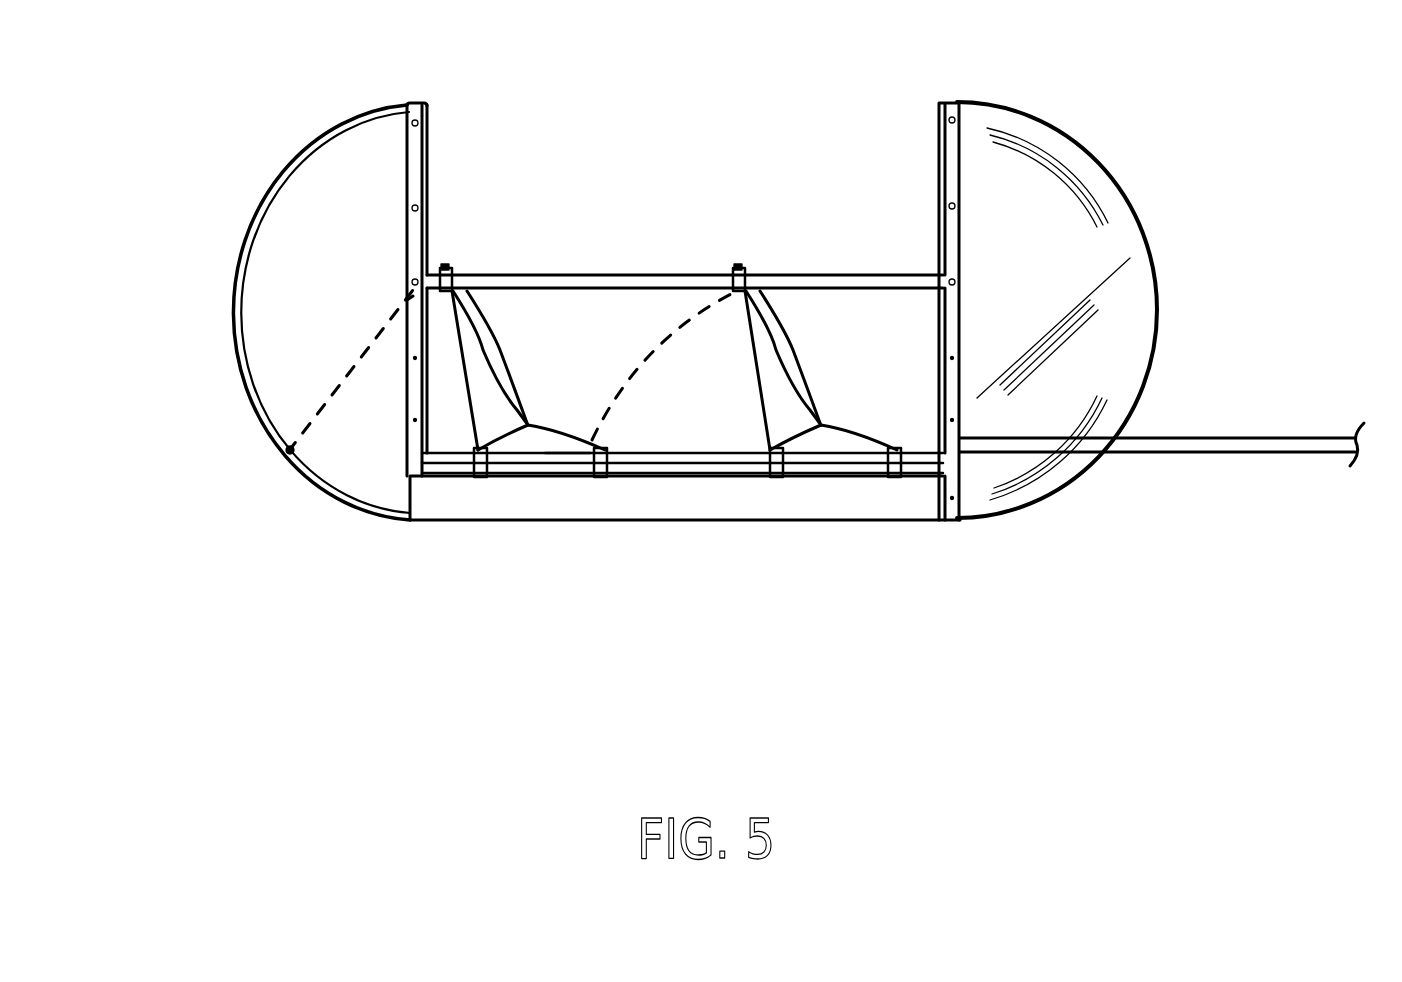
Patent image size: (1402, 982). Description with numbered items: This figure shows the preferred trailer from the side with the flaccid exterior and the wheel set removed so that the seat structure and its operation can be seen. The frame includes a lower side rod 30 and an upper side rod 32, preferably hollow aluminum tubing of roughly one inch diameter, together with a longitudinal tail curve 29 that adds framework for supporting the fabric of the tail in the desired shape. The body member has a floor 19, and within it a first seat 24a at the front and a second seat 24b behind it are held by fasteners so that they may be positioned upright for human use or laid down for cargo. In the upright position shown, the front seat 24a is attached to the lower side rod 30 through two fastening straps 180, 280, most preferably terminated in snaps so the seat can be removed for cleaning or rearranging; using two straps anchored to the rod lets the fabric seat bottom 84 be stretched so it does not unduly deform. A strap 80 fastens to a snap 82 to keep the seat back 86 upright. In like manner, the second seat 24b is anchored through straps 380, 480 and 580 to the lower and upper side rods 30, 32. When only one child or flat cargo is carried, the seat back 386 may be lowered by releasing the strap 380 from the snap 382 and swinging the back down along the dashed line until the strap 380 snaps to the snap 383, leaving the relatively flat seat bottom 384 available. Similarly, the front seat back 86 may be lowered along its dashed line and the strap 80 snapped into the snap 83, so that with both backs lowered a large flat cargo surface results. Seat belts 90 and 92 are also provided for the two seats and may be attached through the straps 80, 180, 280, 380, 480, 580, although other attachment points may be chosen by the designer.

The longitudinal tail curve 29 is at (225, 277).
The snap 383 is at (290, 450).
The seat back 386 is at (462, 360).
The second seat 24b is at (434, 454).
The seat belt 92 is at (512, 370).
The snap 382 is at (442, 268).
The strap 380 is at (448, 285).
The upper side rod 32 is at (585, 280).
The snap 82 is at (742, 268).
The strap 80 is at (745, 280).
The first seat 24a is at (786, 428).
The seat belt 90 is at (805, 385).
The seat back 86 is at (748, 362).
The strap 480 is at (478, 472).
The strap 580 is at (600, 478).
The snap 83 is at (592, 453).
The seat bottom 384 is at (545, 453).
The floor 19 is at (480, 515).
The fastening strap 180 is at (770, 472).
The fastening strap 280 is at (895, 470).
The seat bottom 84 is at (820, 452).
The lower side rod 30 is at (918, 458).